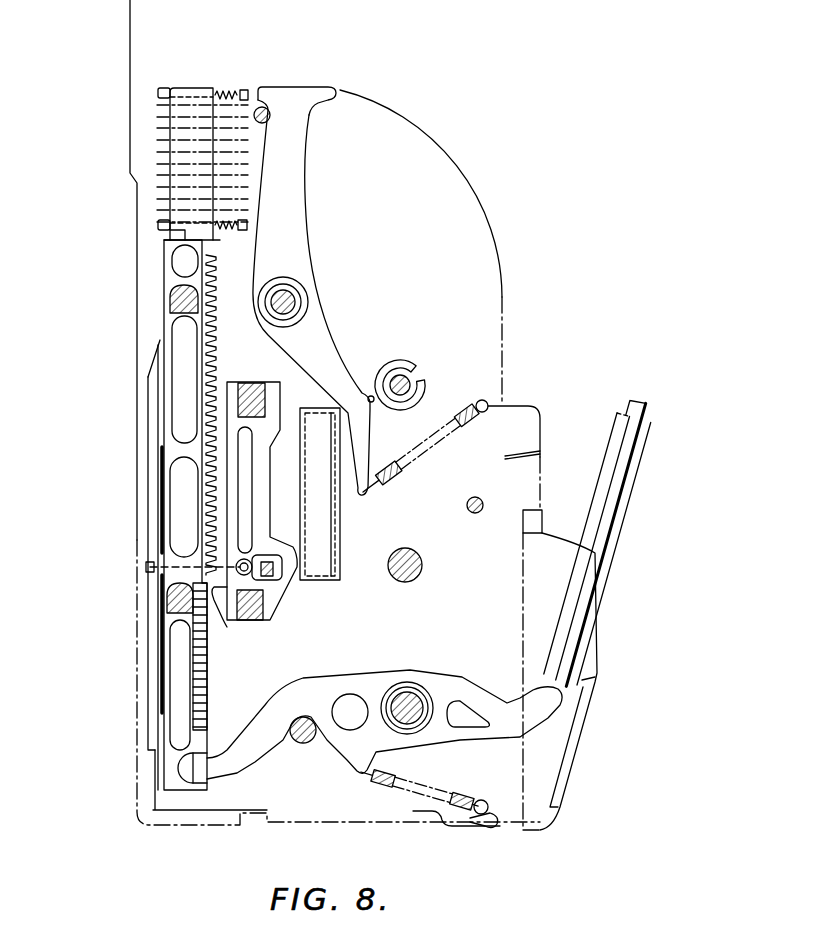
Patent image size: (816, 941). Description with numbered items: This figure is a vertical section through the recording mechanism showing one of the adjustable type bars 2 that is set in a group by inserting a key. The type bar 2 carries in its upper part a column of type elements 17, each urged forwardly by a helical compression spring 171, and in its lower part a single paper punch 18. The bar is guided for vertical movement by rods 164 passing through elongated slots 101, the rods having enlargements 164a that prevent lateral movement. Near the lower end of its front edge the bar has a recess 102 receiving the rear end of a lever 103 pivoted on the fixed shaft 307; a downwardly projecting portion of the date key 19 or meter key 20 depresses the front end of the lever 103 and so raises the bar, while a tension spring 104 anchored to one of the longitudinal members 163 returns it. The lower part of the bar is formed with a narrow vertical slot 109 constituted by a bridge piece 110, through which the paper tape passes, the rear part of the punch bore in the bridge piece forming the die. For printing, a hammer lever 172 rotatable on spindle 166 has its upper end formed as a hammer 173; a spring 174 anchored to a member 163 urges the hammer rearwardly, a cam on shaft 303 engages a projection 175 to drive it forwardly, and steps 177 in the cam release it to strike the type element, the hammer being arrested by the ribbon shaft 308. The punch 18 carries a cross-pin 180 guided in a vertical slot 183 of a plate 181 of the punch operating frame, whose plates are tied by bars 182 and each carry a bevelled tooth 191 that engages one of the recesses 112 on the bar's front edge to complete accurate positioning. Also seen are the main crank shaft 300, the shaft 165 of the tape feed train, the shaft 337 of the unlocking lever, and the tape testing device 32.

The type bar 2 is at (160, 330).
The type elements 17 is at (170, 88).
The paper punch 18 is at (251, 560).
The date setting key 19 is at (630, 496).
The meter key 20 is at (636, 402).
The testing device 32 is at (348, 560).
The elongated slots 101 is at (172, 390).
The recess 102 is at (185, 770).
The lever 103 is at (299, 687).
The tension springs 104 is at (464, 792).
The vertical slot 109 is at (158, 549).
The bridge piece 110 is at (158, 462).
The recesses 112 is at (208, 702).
The longitudinal members 163 is at (533, 403).
The rods 164 is at (170, 300).
The enlargements 164a is at (170, 292).
The shaft 165 is at (304, 735).
The spindle 166 is at (290, 302).
The helical compression spring 171 is at (227, 92).
The hammer lever 172 is at (303, 216).
The hammer 173 is at (268, 87).
The spring 174 is at (427, 448).
The projection 175 is at (368, 396).
The steps 177 is at (427, 367).
The cross-pin 180 is at (255, 578).
The vertical plates 181 is at (270, 500).
The bars 182 is at (253, 393).
The vertical slot 183 is at (247, 477).
The tooth 191 is at (221, 612).
The shaft 300 is at (416, 568).
The shaft 303 is at (403, 378).
The fixed shaft 307 is at (406, 700).
The shaft 308 is at (272, 118).
The shaft 337 is at (481, 510).